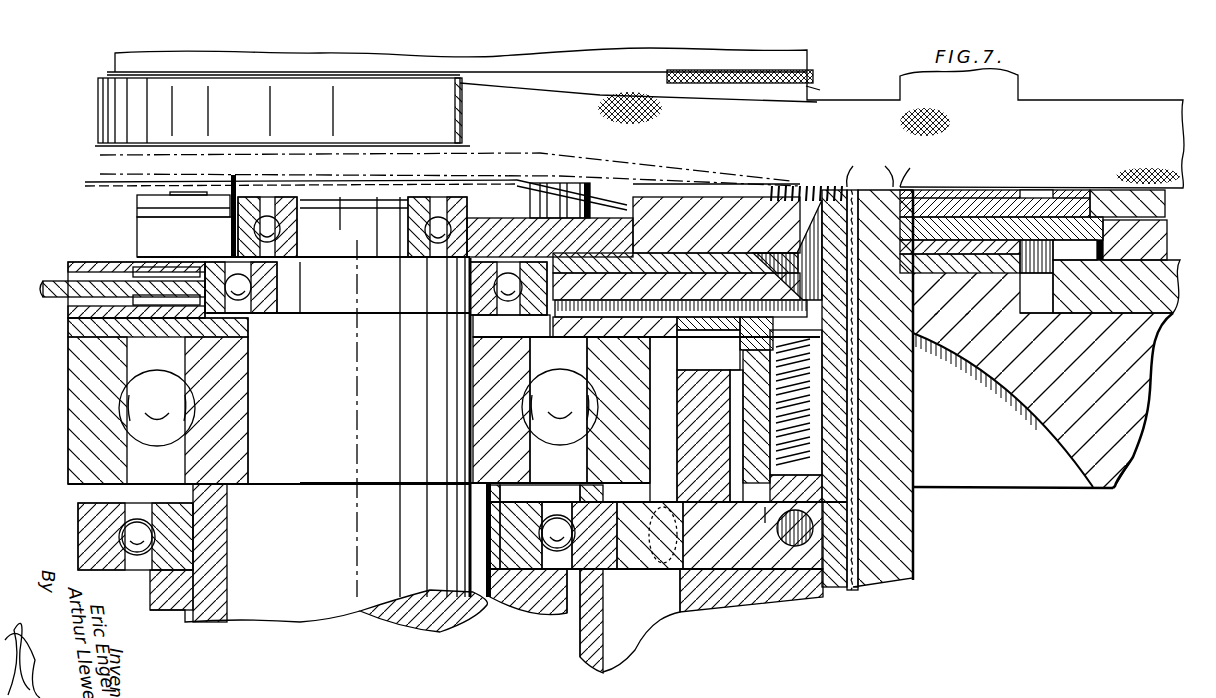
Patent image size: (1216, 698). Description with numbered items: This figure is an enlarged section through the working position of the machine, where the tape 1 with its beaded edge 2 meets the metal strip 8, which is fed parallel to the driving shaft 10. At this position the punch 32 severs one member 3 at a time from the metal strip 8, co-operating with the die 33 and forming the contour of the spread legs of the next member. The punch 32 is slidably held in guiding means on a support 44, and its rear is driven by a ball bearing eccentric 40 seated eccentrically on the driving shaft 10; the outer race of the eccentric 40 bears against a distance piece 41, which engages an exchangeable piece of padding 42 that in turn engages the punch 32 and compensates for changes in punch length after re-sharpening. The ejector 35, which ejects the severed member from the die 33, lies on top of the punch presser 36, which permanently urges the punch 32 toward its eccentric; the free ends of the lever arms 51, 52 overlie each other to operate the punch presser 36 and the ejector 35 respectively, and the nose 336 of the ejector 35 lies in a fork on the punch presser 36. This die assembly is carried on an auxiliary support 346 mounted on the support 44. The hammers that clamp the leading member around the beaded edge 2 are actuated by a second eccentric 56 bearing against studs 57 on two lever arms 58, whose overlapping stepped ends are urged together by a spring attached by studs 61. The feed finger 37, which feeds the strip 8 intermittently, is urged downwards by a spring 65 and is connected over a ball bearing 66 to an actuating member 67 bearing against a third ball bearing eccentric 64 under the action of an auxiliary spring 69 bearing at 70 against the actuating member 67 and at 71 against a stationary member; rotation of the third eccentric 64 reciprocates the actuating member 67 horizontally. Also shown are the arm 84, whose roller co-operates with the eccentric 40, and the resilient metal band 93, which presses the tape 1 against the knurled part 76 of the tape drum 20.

The tape 1 is at (490, 83).
The beaded edge 2 is at (905, 167).
The member 3 is at (830, 185).
The metal strip 8 is at (900, 557).
The driving shaft 10 is at (279, 607).
The tape drum 20 is at (827, 93).
The punch 32 is at (697, 213).
The die 33 is at (908, 188).
The ejector 35 is at (1058, 191).
The punch presser 36 is at (1005, 245).
The feed finger 37 is at (833, 404).
The eccentric 40 is at (457, 200).
The distance piece 41 is at (507, 223).
The piece of padding 42 is at (633, 198).
The support 44 is at (1140, 433).
The lever arm 51 is at (1167, 232).
The second lever arm 52 is at (1140, 210).
The second eccentric 56 is at (248, 326).
The studs 57 is at (157, 273).
The lever arms 58 is at (80, 263).
The studs 61 is at (45, 276).
The third ball bearing eccentric 64 is at (107, 551).
The spring 65 is at (812, 428).
The ball bearing 66 is at (797, 548).
The actuating member 67 is at (727, 548).
The auxiliary spring 69 is at (661, 577).
The bearing point on actuating member 70 is at (647, 569).
The bearing point on stationary member 71 is at (697, 588).
The knurled part 76 is at (808, 93).
The arm 84 is at (153, 207).
The resilient metal band 93 is at (118, 115).
The nose 336 is at (870, 171).
The auxiliary support 346 is at (1061, 276).